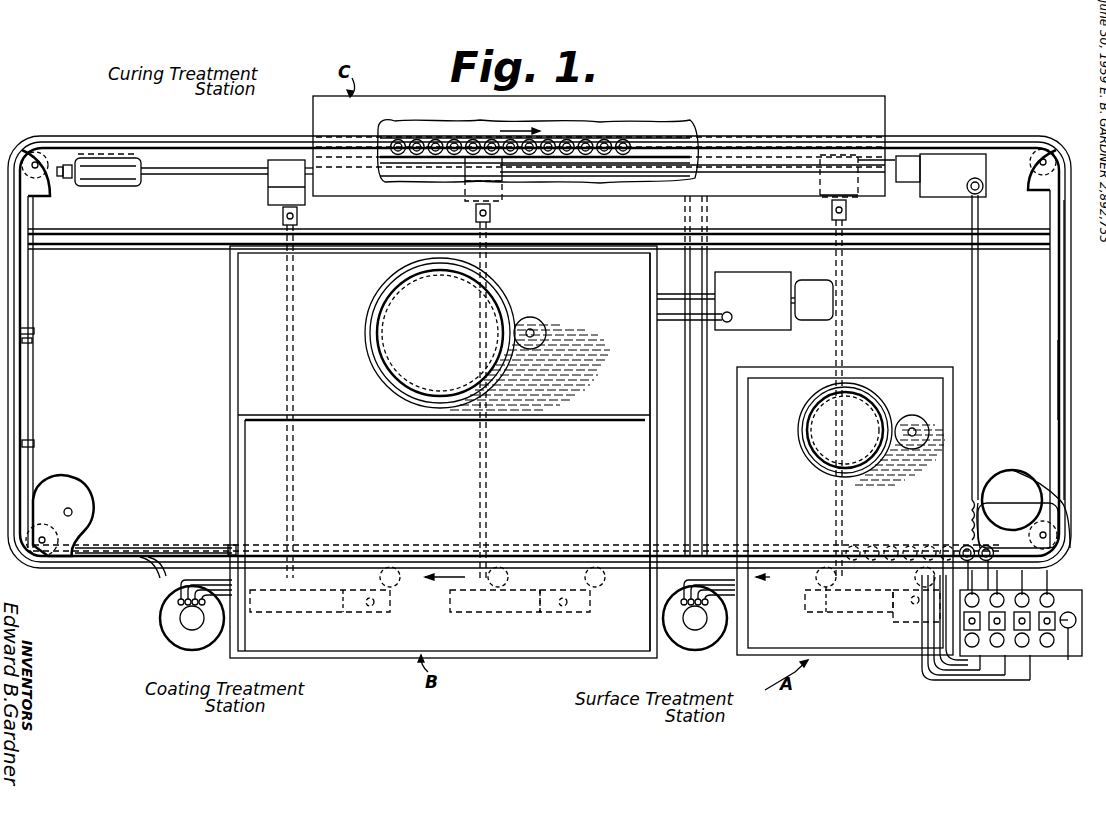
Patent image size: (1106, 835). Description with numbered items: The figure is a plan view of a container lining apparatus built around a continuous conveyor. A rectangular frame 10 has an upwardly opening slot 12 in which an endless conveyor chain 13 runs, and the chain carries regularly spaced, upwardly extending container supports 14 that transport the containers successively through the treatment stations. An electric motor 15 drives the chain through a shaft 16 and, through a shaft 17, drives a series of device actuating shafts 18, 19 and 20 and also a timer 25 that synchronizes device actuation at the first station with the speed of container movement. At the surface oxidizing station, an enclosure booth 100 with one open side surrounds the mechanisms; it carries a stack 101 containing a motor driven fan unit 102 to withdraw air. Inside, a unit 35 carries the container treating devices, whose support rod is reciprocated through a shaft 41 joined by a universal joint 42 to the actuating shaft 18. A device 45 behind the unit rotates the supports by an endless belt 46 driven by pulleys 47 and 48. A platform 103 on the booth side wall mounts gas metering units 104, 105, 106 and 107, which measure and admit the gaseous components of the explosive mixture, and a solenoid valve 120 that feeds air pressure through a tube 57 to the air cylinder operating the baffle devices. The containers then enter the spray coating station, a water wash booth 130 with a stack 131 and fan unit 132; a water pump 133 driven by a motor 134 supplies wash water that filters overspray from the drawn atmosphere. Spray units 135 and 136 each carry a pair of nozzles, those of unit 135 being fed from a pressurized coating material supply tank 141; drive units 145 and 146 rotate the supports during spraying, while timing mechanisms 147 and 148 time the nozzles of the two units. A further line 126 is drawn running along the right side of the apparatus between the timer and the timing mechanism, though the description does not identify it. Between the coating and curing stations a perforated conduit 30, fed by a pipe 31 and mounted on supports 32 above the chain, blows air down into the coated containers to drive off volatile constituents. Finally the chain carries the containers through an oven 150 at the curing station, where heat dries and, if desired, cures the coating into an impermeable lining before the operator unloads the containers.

The rectangular frame 10 is at (1052, 321).
The upwardly opening slot 12 is at (1059, 360).
The endless conveyor chain 13 is at (1062, 283).
The container supports 14 is at (588, 137).
The electric motor 15 is at (102, 190).
The shaft 16 is at (62, 180).
The shaft 17 is at (208, 170).
The device actuating shaft 18 is at (850, 198).
The device actuating shaft 19 is at (476, 210).
The device actuating shaft 20 is at (282, 212).
The timer 25 is at (958, 200).
The perforated conduit 30 is at (26, 420).
The pipe 31 is at (158, 578).
The supports 32 is at (34, 444).
The unit 35 is at (841, 614).
The shaft 41 is at (845, 352).
The universal joint 42 is at (830, 209).
The device for rotating container supports 45 is at (814, 578).
The endless belt 46 is at (872, 592).
The pulley 47 is at (936, 612).
The pulley 48 is at (808, 600).
The tube 57 is at (950, 682).
The enclosure booth 100 is at (838, 658).
The stack 101 is at (810, 462).
The motor driven fan unit 102 is at (925, 404).
The platform 103 is at (1076, 590).
The gas metering unit 104 is at (978, 648).
The gas metering unit 105 is at (1002, 648).
The gas metering unit 106 is at (1028, 648).
The gas metering unit 107 is at (1052, 648).
The solenoid valve 120 is at (1075, 632).
The conduit 126 is at (982, 404).
The water wash booth 130 is at (566, 658).
The stack 131 is at (505, 296).
The fan unit 132 is at (545, 320).
The water pump 133 is at (755, 330).
The motor 134 is at (812, 282).
The spray unit 135 is at (505, 614).
The spray unit 136 is at (305, 614).
The pressurized coating material supply tank 141 is at (163, 640).
The drive unit 145 is at (603, 588).
The drive unit 146 is at (402, 588).
The timing mechanism 147 is at (1030, 482).
The timing mechanism 148 is at (100, 510).
The oven 150 is at (697, 97).